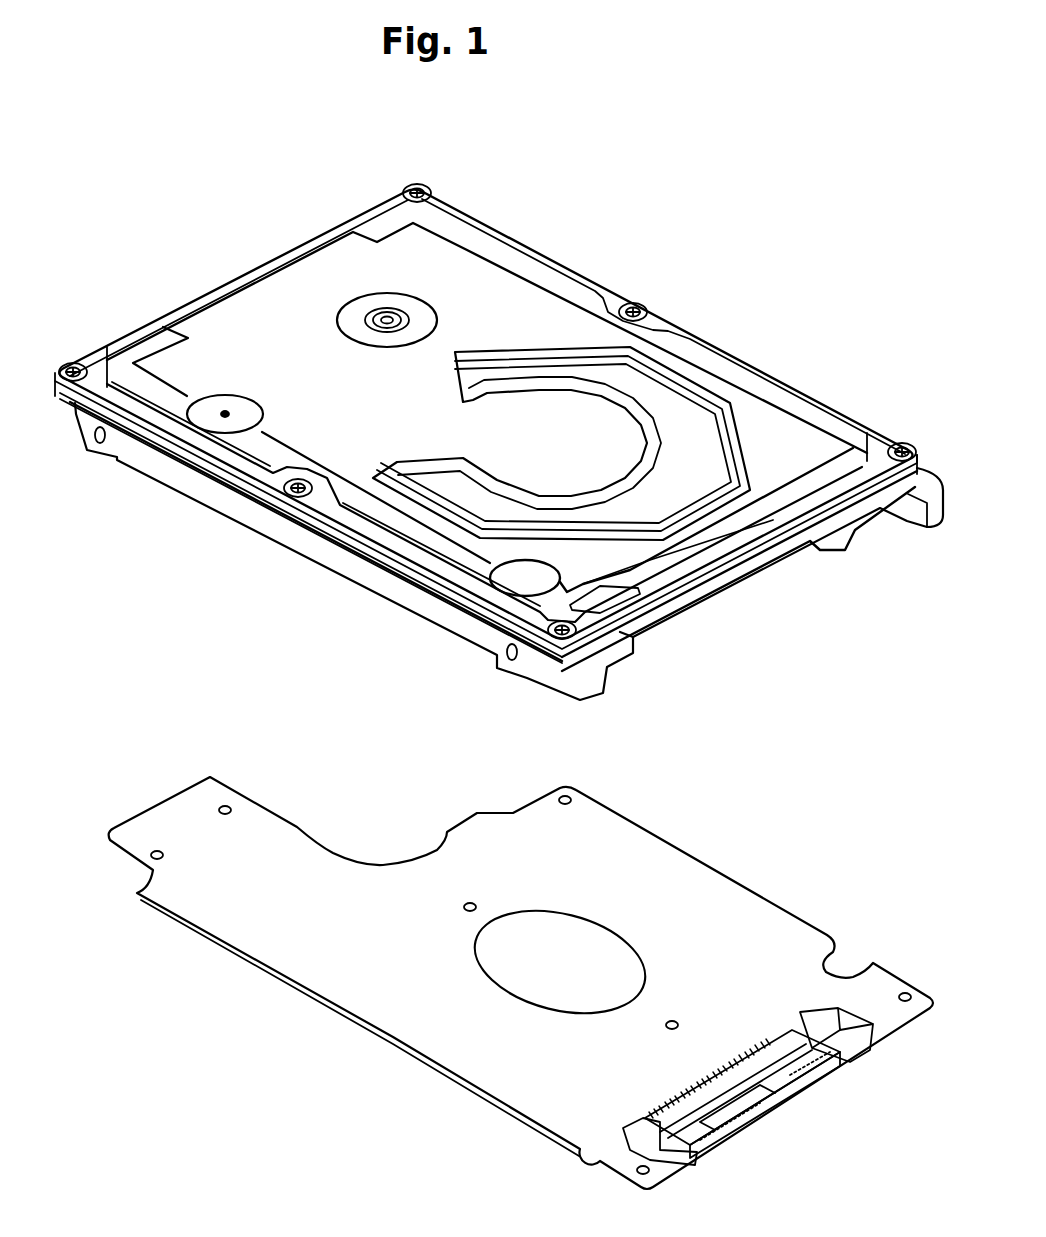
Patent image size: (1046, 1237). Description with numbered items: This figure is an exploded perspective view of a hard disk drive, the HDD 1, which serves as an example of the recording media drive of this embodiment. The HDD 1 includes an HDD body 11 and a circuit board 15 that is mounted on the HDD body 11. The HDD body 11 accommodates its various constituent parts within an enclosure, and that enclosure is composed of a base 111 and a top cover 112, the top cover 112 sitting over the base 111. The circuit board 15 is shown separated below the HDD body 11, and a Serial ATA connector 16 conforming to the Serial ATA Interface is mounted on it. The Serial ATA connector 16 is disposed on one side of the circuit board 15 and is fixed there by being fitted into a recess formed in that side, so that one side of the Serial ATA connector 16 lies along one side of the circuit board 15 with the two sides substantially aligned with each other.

The HDD 1 is at (892, 718).
The HDD body 11 is at (760, 323).
The base 111 is at (882, 510).
The top cover 112 is at (883, 437).
The circuit board 15 is at (787, 930).
The Serial ATA connector 16 is at (867, 1043).